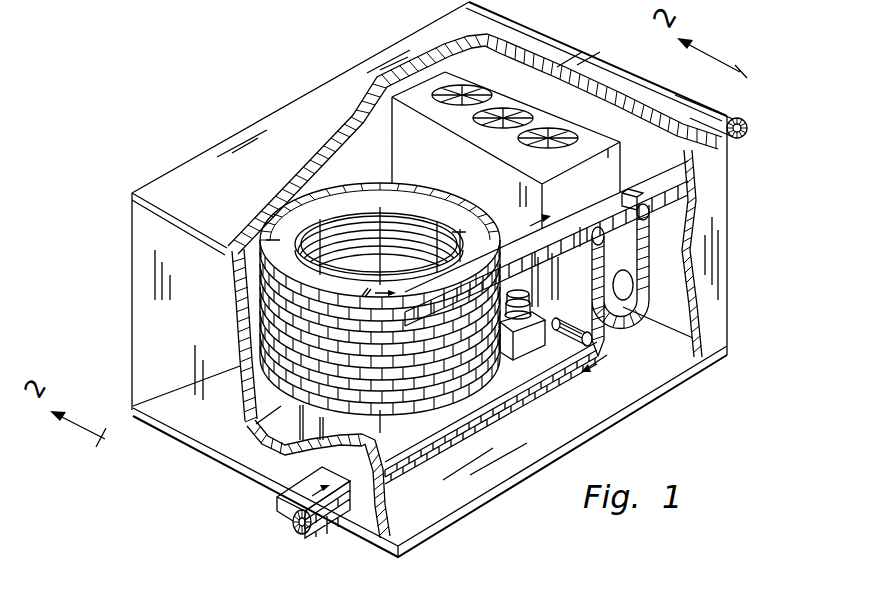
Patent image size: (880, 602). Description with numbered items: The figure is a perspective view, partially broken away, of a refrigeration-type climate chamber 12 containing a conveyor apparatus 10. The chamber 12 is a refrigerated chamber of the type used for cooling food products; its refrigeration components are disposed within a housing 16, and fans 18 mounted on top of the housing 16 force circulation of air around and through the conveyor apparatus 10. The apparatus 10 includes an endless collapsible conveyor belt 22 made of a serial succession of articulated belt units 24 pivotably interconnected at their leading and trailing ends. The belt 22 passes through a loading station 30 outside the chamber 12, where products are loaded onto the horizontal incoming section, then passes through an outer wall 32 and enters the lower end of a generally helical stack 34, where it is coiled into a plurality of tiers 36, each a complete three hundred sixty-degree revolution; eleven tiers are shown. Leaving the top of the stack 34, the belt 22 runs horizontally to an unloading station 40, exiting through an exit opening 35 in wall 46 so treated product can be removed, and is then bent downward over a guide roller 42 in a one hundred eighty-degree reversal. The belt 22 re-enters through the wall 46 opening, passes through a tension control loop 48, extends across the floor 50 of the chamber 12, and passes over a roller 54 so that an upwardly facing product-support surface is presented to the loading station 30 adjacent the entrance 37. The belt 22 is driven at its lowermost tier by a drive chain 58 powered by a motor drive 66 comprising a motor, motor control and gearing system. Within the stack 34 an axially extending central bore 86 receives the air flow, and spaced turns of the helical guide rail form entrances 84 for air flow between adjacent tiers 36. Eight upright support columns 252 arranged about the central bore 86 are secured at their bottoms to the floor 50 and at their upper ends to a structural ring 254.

The conveyor apparatus 10 is at (465, 178).
The climate chamber 12 is at (190, 163).
The housing 16 is at (402, 136).
The fans 18 is at (510, 108).
The endless collapsible conveyor belt 22 is at (270, 530).
The articulated belt units 24 is at (484, 428).
The loading station 30 is at (277, 500).
The outer wall 32 is at (147, 340).
The helical stack 34 is at (260, 293).
The exit opening 35 is at (668, 193).
The tiers 36 is at (240, 383).
The entrance 37 is at (278, 485).
The unloading station 40 is at (708, 100).
The guide roller 42 is at (752, 117).
The wall 46 is at (674, 310).
The tension control loop 48 is at (637, 313).
The floor 50 is at (597, 416).
The roller 54 is at (310, 533).
The drive chain 58 is at (560, 373).
The motor drive 66 is at (518, 280).
The entrances 84 is at (434, 228).
The central bore 86 is at (352, 215).
The support columns 252 is at (397, 214).
The structural ring 254 is at (338, 205).